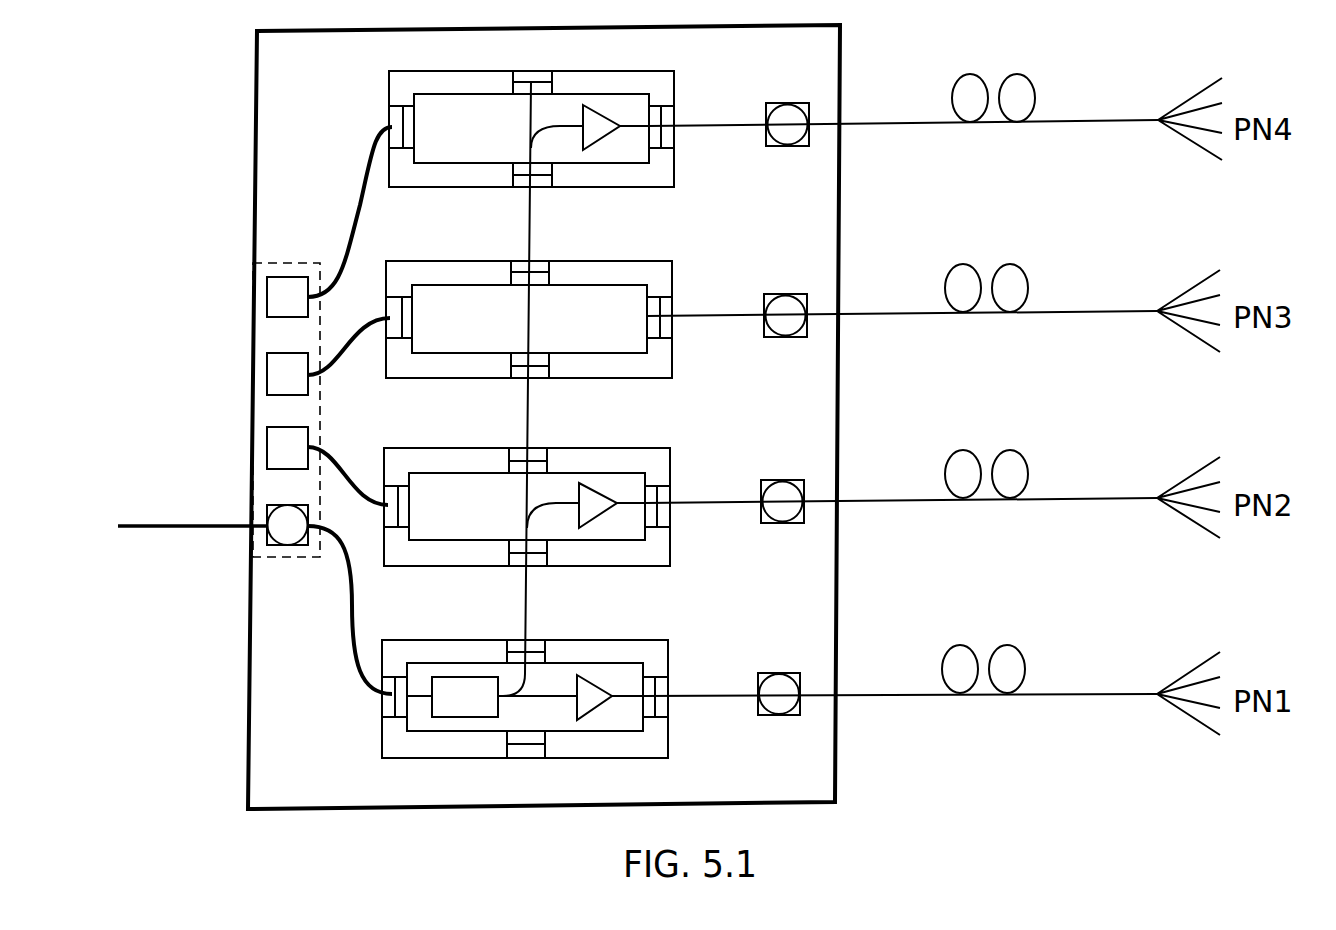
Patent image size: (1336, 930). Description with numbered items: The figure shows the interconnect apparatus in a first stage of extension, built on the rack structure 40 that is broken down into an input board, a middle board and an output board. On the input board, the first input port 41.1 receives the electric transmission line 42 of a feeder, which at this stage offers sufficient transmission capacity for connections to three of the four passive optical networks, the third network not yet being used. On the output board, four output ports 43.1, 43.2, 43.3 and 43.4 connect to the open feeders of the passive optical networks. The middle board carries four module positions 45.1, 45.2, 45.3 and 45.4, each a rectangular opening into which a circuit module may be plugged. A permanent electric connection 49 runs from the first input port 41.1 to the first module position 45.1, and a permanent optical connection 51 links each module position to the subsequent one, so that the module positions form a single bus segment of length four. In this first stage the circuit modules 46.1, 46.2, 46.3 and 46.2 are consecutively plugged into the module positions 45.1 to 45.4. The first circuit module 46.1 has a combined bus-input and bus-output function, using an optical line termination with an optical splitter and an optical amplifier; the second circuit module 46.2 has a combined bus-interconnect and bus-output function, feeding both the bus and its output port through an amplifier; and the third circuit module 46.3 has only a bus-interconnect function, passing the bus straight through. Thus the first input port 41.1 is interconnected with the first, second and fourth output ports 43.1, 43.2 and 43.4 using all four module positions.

The rack structure 40 is at (248, 112).
The first input port 41.1 is at (246, 505).
The electric transmission line 42 is at (191, 528).
The output port 43.1 is at (765, 716).
The output port 43.2 is at (773, 525).
The output port 43.3 is at (772, 339).
The output port 43.4 is at (768, 148).
The module position 45.1 is at (660, 756).
The module position 45.2 is at (653, 565).
The module position 45.3 is at (660, 378).
The module position 45.4 is at (670, 188).
The first circuit module 46.1 is at (648, 660).
The second circuit module 46.2 is at (655, 93).
The third circuit module 46.3 is at (650, 285).
The permanent electric connection 49 is at (345, 620).
The permanent optical connection 51 is at (533, 222).